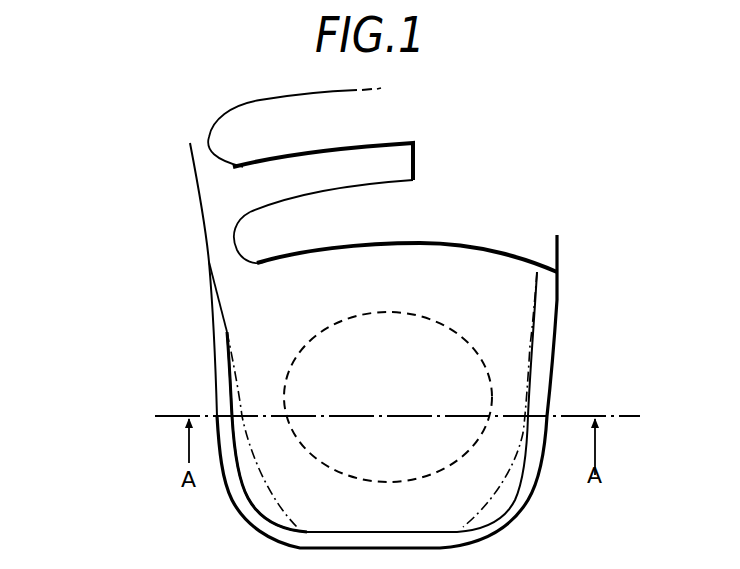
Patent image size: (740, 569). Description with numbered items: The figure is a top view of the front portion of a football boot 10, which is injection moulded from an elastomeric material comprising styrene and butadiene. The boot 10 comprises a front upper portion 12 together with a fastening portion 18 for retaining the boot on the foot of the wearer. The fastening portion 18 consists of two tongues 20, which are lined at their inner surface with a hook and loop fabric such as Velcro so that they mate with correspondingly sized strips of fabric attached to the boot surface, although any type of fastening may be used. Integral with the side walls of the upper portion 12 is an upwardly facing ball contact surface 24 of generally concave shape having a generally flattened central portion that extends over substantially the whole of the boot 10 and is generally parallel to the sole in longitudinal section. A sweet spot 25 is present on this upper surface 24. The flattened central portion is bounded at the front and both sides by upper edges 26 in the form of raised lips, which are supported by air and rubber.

The boot 10 is at (142, 255).
The front upper portion 12 is at (247, 513).
The fastening portion 18 is at (462, 173).
The tongues 20 is at (247, 157).
The ball contact surface 24 is at (463, 505).
The sweet spot 25 is at (457, 362).
The upper edges 26 is at (523, 455).